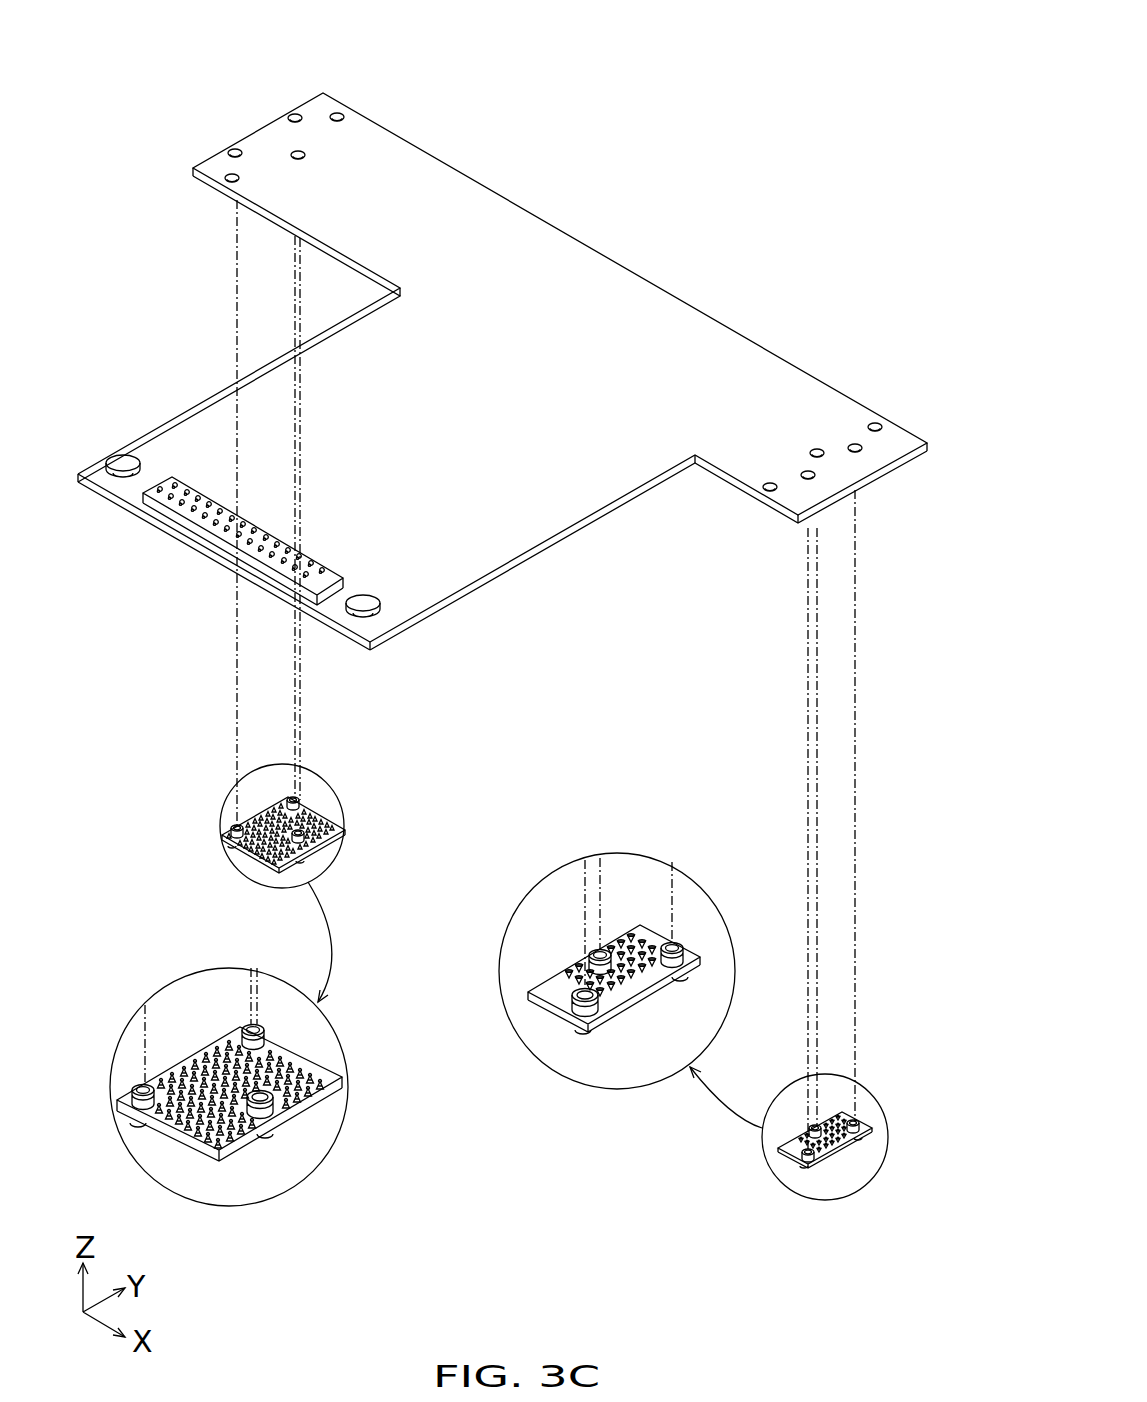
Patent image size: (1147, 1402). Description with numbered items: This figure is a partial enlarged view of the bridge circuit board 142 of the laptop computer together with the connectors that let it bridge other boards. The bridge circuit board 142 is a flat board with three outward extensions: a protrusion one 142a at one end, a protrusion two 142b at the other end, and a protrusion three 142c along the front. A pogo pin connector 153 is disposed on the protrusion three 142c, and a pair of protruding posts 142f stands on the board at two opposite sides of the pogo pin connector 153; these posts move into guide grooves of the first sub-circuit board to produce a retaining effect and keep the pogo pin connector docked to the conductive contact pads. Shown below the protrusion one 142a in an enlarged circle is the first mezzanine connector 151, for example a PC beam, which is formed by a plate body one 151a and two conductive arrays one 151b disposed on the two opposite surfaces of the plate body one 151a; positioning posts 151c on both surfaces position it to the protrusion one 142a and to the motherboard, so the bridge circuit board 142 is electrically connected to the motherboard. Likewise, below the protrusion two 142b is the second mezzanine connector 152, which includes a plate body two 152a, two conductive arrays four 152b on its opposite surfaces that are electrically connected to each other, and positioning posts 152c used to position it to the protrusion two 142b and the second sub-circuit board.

The bridge circuit board 142 is at (700, 237).
The protrusion one 142a is at (307, 103).
The protrusion two 142b is at (887, 475).
The protrusion three 142c is at (197, 547).
The protruding posts 142f is at (123, 461).
The pogo pin connector 153 is at (227, 503).
The first mezzanine connector 151 is at (235, 1065).
The plate body one 151a is at (167, 1137).
The conductive arrays one 151b is at (293, 1060).
The positioning posts 151c is at (250, 1020).
The second mezzanine connector 152 is at (617, 950).
The plate body two 152a is at (633, 1000).
The conductive arrays four 152b is at (645, 933).
The positioning posts 152c is at (590, 960).